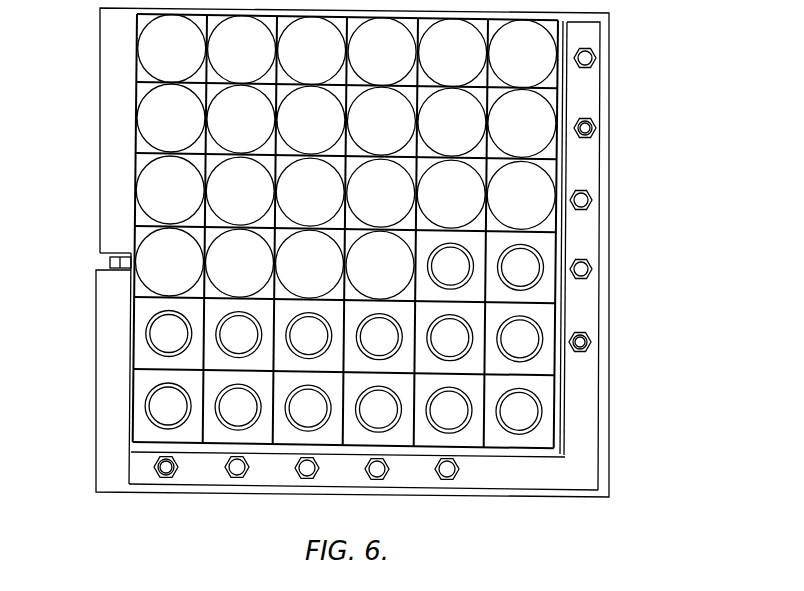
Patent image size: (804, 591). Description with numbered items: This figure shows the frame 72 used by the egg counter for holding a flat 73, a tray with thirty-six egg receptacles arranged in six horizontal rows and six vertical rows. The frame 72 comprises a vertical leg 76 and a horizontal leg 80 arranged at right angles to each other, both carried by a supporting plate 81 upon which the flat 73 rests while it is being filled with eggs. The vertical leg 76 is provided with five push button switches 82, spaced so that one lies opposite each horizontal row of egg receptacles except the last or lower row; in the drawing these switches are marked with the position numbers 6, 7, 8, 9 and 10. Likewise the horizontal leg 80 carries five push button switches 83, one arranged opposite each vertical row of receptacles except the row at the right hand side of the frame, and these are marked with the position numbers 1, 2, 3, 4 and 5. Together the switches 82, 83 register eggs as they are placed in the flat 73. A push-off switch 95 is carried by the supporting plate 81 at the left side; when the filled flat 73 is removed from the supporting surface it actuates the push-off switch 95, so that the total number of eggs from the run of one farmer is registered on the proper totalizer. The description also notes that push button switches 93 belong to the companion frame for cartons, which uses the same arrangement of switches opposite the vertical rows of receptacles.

The push button switches 93 is at (394, 14).
The push-off switch 95 is at (110, 263).
The supporting plate 81 is at (96, 380).
The frame 72 is at (596, 110).
The push button switches 82 is at (592, 131).
The vertical leg 76 is at (589, 233).
The flat 73 is at (558, 313).
The push button switches 83 is at (172, 471).
The horizontal leg 80 is at (480, 482).
The terminal 1 is at (171, 466).
The terminal 2 is at (242, 466).
The terminal 3 is at (312, 466).
The terminal 4 is at (382, 466).
The terminal 5 is at (452, 466).
The terminal 6 is at (585, 51).
The terminal 7 is at (585, 120).
The terminal 8 is at (581, 193).
The terminal 9 is at (581, 262).
The terminal 10 is at (580, 334).